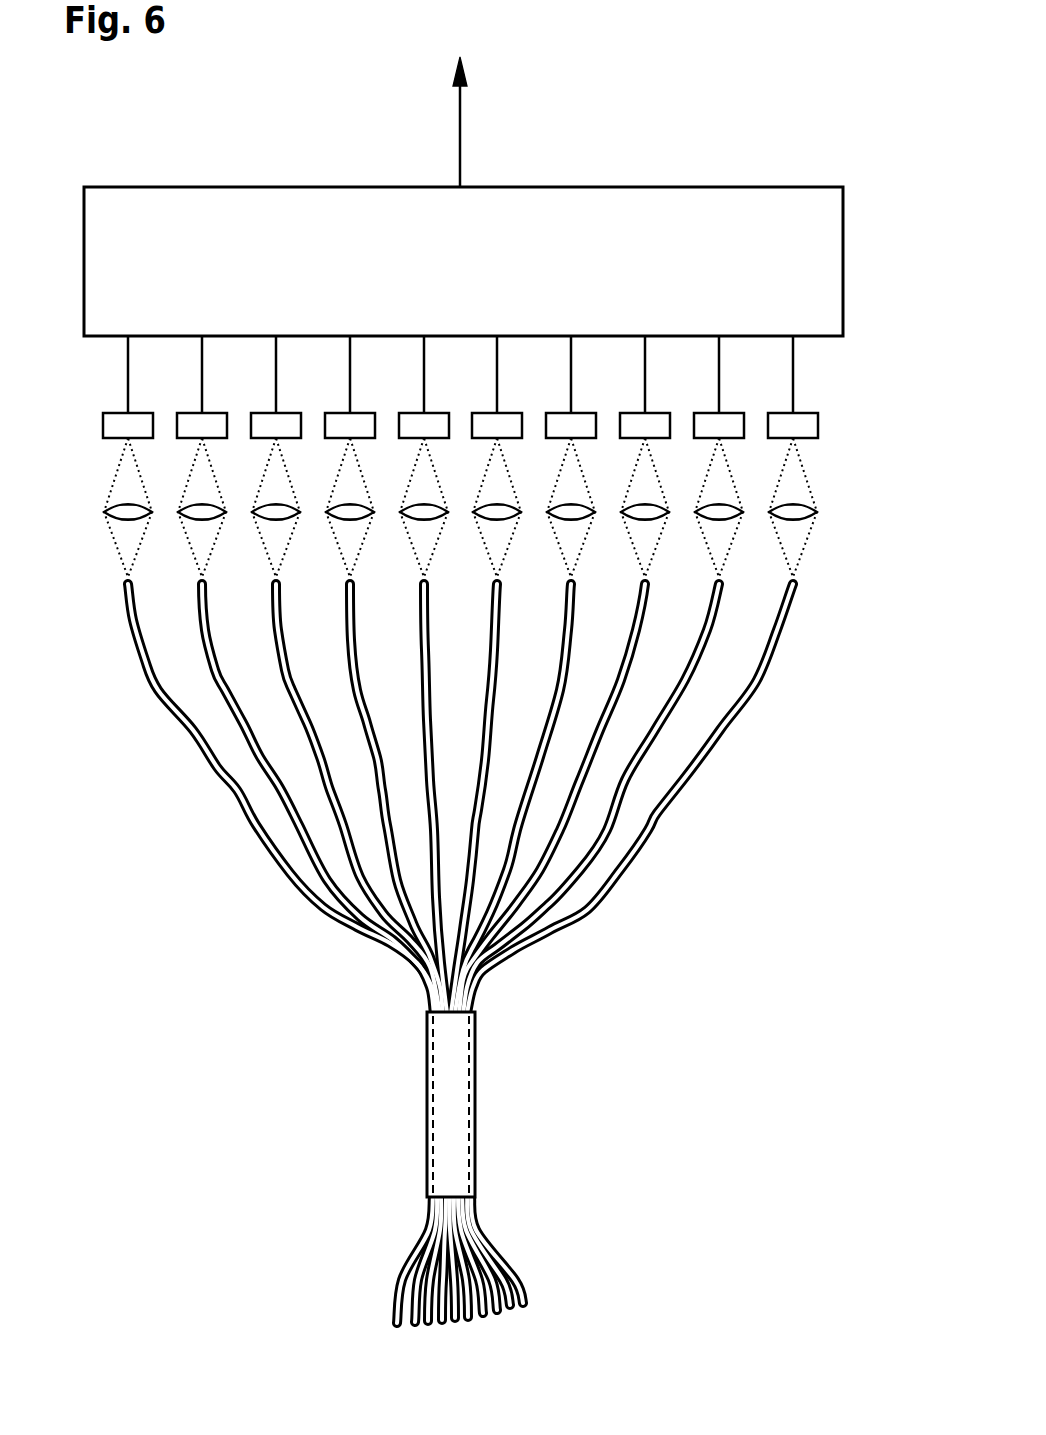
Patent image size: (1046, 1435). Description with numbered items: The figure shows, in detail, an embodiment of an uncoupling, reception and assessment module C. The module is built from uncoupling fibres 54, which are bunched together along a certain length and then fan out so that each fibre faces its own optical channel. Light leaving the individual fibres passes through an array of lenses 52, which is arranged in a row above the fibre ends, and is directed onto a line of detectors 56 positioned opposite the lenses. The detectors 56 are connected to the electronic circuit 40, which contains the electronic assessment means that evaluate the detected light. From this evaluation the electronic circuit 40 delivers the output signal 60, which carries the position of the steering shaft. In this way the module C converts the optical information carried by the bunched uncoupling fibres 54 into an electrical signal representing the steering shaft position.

The electronic circuit 40 is at (692, 232).
The output signal 60 is at (460, 124).
The line of detectors 56 is at (120, 427).
The array of lenses 52 is at (126, 514).
The uncoupling fibres 54 is at (448, 1113).
The uncoupling, reception and assessment module C is at (212, 983).